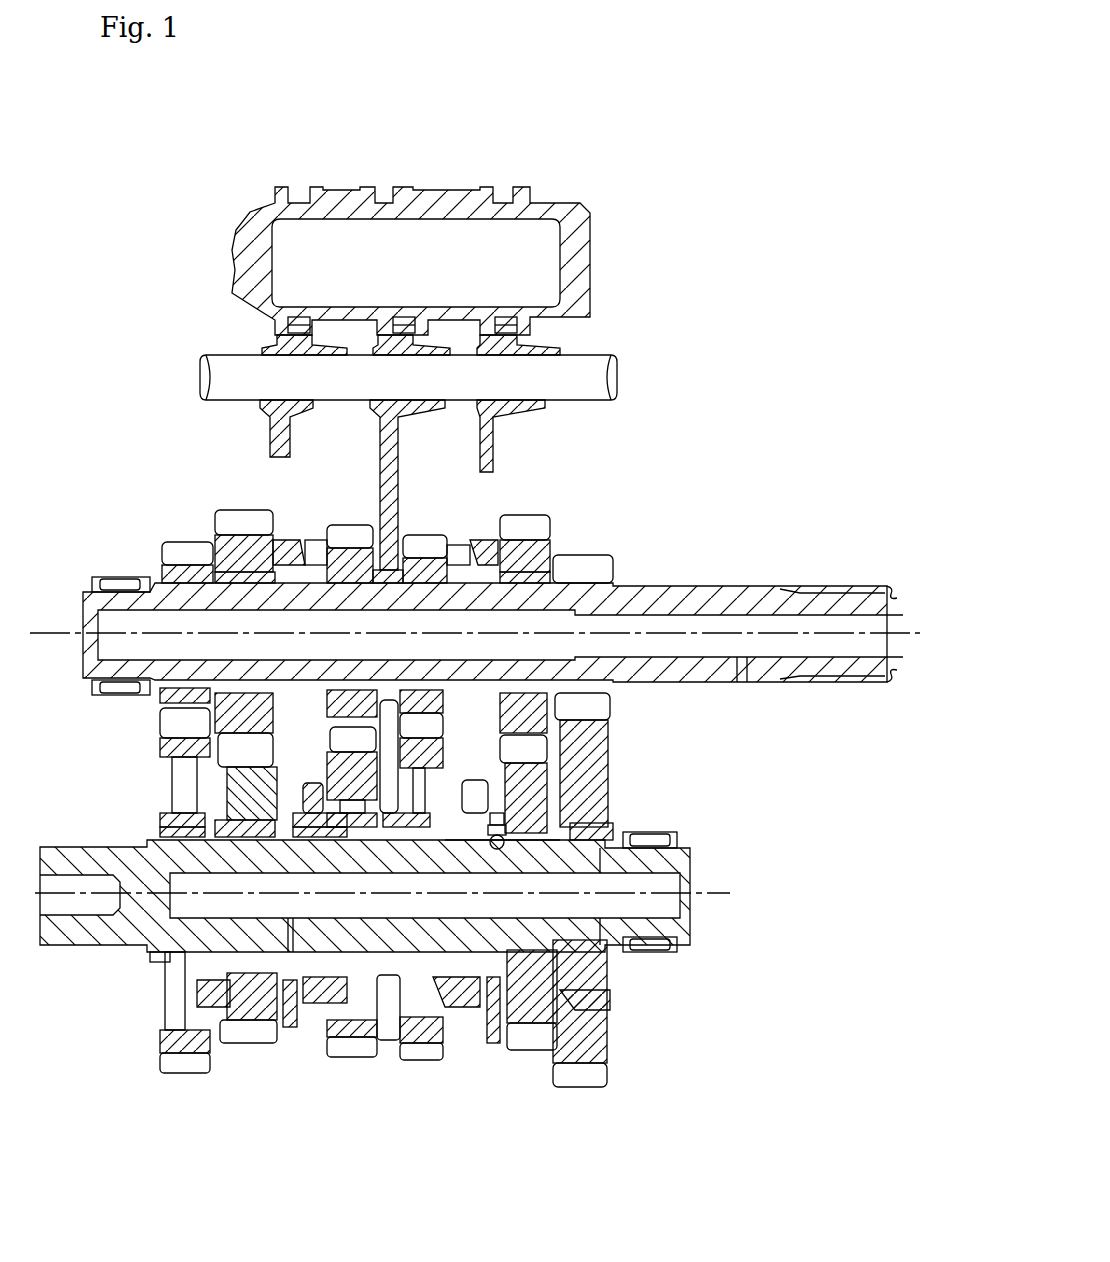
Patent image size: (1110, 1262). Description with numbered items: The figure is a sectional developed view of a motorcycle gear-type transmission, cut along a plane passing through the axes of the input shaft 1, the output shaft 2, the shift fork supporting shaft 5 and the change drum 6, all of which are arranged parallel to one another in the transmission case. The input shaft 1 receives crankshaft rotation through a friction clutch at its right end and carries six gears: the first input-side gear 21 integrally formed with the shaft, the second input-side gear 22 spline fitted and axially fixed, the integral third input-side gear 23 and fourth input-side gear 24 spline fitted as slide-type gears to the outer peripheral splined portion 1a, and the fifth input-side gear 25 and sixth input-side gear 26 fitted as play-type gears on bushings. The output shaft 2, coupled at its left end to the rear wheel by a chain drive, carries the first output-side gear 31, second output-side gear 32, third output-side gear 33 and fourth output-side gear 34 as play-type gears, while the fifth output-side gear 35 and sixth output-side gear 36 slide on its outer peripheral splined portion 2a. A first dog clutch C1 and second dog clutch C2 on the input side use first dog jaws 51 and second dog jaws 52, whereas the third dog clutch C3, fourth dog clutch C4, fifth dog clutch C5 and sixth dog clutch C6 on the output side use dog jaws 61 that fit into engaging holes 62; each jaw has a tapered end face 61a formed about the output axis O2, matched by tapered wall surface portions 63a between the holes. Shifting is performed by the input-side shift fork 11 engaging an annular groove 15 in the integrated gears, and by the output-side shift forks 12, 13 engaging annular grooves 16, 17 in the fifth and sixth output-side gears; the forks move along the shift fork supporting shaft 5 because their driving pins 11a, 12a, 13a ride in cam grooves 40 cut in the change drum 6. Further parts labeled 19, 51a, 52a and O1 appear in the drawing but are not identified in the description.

The input shaft 1 is at (707, 682).
The outer peripheral splined portion 1a is at (471, 610).
The output shaft 2 is at (110, 945).
The outer peripheral splined portion 2a is at (560, 840).
The shift fork supporting shaft 5 is at (200, 360).
The change drum 6 is at (240, 250).
The input-side shift fork 11 is at (385, 437).
The driving pin 11a is at (392, 278).
The output-side shift fork 12 is at (482, 433).
The driving pin 12a is at (496, 278).
The output-side shift fork 13 is at (278, 440).
The driving pin 13a is at (307, 278).
The annular groove 15 is at (342, 609).
The annular groove 16 is at (548, 936).
The annular groove 17 is at (228, 893).
The bearing 19 is at (222, 580).
The first input-side gear 21 is at (590, 565).
The second input-side gear 22 is at (175, 555).
The third input-side gear 23 is at (430, 545).
The fourth input-side gear 24 is at (345, 530).
The fifth input-side gear 25 is at (528, 520).
The sixth input-side gear 26 is at (230, 520).
The first output-side gear 31 is at (598, 735).
The second output-side gear 32 is at (172, 1073).
The third output-side gear 33 is at (423, 1060).
The fourth output-side gear 34 is at (350, 1057).
The fifth output-side gear 35 is at (530, 1050).
The sixth output-side gear 36 is at (245, 1043).
The cam grooves 40 is at (288, 320).
The first dog jaws 51 is at (318, 550).
The sleeve portion 51a is at (420, 625).
The second dog jaws 52 is at (288, 550).
The ring portion 52a is at (548, 536).
The dog jaws 61 is at (305, 900).
The end face 61a is at (385, 950).
The engaging holes 62 is at (360, 930).
The wall surface portion 63a is at (390, 1040).
The first dog clutch C1 is at (485, 510).
The second dog clutch C2 is at (280, 500).
The third dog clutch C3 is at (580, 1010).
The fourth dog clutch C4 is at (420, 1030).
The fifth dog clutch C5 is at (325, 1015).
The sixth dog clutch C6 is at (178, 1020).
The first axis O1 is at (52, 656).
The output axis O2 is at (721, 922).